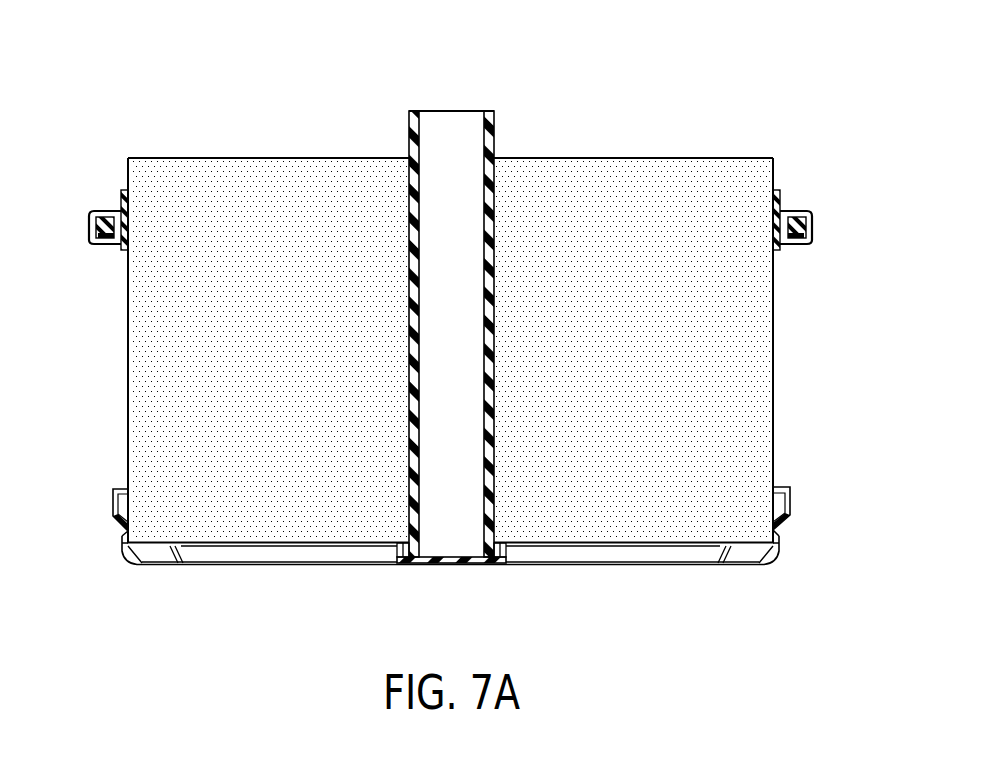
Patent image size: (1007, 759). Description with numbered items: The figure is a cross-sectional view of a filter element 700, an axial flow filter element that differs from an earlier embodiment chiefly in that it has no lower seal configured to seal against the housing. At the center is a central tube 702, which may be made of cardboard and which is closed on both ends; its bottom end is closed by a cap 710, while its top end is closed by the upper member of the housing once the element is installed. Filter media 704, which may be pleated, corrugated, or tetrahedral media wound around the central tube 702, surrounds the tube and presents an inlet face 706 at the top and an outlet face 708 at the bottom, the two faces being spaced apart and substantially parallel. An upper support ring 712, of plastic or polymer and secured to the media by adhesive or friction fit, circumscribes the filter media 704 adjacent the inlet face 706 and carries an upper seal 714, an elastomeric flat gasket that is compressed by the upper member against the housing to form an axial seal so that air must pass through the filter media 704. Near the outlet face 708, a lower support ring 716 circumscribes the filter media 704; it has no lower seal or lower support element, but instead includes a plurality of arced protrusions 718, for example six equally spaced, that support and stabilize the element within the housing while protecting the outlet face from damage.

The filter element 700 is at (242, 99).
The central tube 702 is at (495, 133).
The filter media 704 is at (755, 176).
The inlet face 706 is at (670, 157).
The outlet face 708 is at (676, 549).
The cap 710 is at (496, 565).
The upper support ring 712 is at (121, 199).
The upper seal 714 is at (106, 243).
The lower support ring 716 is at (124, 533).
The arced protrusions 718 is at (112, 491).